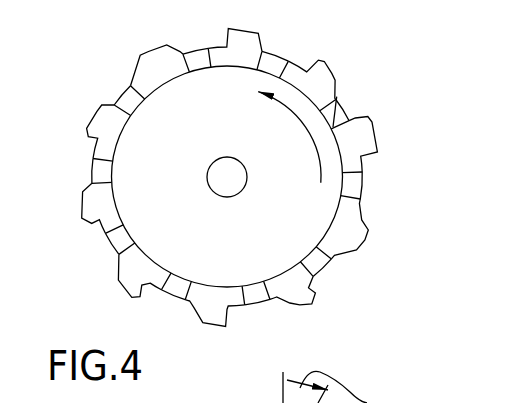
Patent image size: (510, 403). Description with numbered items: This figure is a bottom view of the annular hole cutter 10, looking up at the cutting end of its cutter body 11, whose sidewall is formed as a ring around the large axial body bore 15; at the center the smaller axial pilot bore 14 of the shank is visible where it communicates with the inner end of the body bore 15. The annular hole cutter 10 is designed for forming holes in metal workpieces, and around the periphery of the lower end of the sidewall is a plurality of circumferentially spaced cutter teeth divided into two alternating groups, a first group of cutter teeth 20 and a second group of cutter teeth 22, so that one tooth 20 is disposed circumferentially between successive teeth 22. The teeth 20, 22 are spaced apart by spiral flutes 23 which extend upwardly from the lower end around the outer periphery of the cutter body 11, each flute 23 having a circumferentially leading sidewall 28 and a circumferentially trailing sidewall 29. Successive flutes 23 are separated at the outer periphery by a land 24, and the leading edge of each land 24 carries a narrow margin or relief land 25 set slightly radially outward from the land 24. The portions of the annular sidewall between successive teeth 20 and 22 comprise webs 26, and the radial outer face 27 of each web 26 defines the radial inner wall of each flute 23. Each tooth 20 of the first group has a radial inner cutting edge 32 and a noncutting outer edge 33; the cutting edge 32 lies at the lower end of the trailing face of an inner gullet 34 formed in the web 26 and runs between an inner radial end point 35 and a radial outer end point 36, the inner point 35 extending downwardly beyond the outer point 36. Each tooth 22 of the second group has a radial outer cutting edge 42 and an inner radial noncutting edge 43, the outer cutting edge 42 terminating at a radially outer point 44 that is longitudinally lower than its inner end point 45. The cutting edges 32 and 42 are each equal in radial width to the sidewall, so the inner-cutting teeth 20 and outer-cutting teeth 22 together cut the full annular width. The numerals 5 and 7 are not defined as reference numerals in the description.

The cutting edge 5 is at (374, 121).
The gullet 7 is at (360, 261).
The annular hole cutter 10 is at (128, 72).
The cutter body 11 is at (97, 158).
The axial pilot bore 14 is at (208, 186).
The axial body bore 15 is at (121, 96).
The cutter tooth 20 is at (251, 40).
The cutter tooth 22 is at (323, 66).
The spiral flute 23 is at (93, 233).
The land 24 is at (120, 283).
The relief land 25 is at (133, 300).
The web 26 is at (196, 60).
The radial outer face 27 is at (330, 278).
The circumferentially leading sidewall 28 is at (86, 190).
The circumferentially trailing sidewall 29 is at (86, 130).
The radial inner cutting edge 32 is at (345, 125).
The noncutting outer edge 33 is at (365, 131).
The inner gullet 34 is at (118, 251).
The inner radial end point 35 is at (340, 122).
The radial outer end point 36 is at (350, 128).
The radial outer cutting edge 42 is at (365, 226).
The inner radial noncutting edge 43 is at (358, 222).
The point 44 is at (364, 228).
The inner end point 45 is at (362, 221).